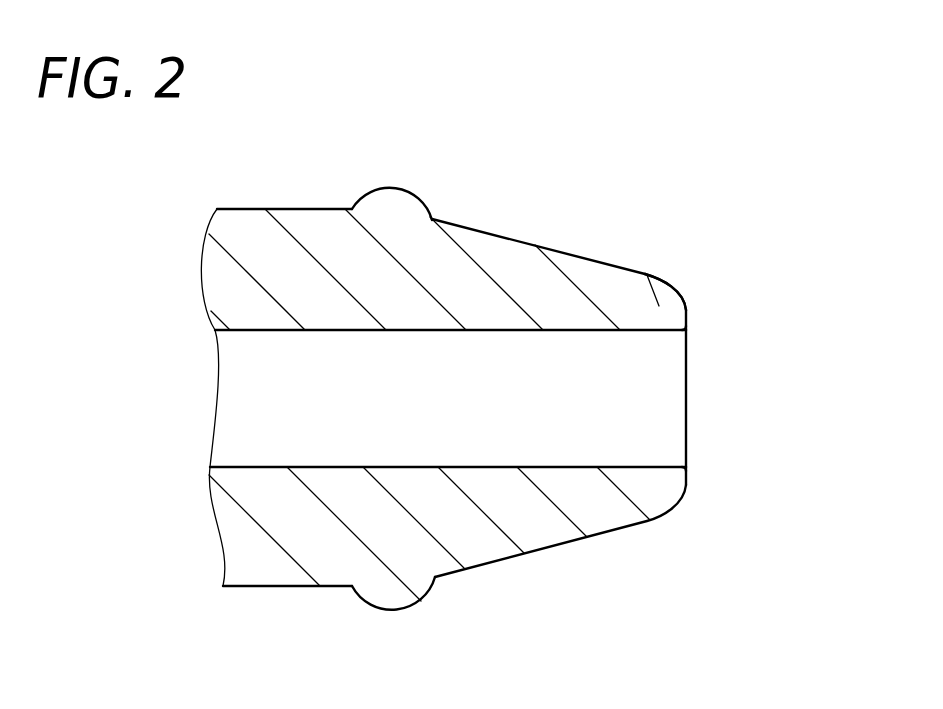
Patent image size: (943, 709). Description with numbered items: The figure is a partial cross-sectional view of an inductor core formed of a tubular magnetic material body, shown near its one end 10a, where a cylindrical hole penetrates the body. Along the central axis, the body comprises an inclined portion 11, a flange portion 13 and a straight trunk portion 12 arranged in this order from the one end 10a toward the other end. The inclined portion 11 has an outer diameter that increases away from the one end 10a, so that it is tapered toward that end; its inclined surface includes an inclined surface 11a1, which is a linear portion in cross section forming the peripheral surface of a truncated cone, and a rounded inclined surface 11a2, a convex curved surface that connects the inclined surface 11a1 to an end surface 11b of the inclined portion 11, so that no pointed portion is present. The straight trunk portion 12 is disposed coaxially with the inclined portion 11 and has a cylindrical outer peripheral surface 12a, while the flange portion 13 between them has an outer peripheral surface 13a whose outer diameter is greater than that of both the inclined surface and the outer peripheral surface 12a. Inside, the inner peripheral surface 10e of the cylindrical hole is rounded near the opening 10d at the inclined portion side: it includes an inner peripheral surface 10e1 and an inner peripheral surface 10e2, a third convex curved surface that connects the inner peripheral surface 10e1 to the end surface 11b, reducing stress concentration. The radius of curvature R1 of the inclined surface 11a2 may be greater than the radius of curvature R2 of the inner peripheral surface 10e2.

The one end 10a is at (686, 383).
The opening 10d is at (686, 447).
The inner peripheral surface 10e is at (240, 330).
The inner peripheral surface 10e1 is at (582, 466).
The inner peripheral surface 10e2 is at (686, 467).
The inclined portion 11 is at (495, 543).
The inclined surface 11a1 is at (505, 236).
The inclined surface 11a2 is at (681, 293).
The end surface 11b is at (687, 313).
The straight trunk portion 12 is at (313, 563).
The outer peripheral surface 12a is at (278, 208).
The flange portion 13 is at (392, 593).
The outer peripheral surface 13a is at (397, 188).
The radius of curvature R1 is at (673, 279).
The radius of curvature R2 is at (689, 333).